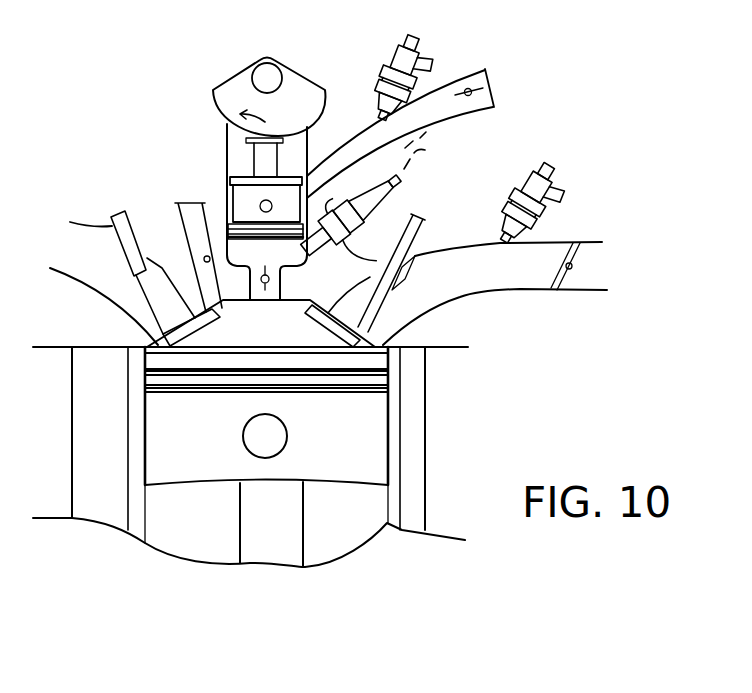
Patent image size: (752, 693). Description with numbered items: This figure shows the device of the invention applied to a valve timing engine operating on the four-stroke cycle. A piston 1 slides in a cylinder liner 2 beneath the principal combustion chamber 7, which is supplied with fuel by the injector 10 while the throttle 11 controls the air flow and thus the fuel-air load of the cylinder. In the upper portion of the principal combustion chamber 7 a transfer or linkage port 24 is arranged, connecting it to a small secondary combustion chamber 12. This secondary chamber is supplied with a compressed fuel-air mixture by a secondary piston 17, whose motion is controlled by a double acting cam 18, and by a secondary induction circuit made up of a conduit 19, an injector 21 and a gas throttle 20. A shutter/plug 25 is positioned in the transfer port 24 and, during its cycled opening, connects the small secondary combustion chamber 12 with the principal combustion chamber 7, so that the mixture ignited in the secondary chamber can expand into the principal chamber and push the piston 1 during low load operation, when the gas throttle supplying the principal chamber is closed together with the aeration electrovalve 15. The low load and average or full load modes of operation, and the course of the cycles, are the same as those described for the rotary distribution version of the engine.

The piston 1 is at (160, 460).
The cylinder liner 2 is at (140, 415).
The principal combustion chamber 7 is at (230, 330).
The injector 10 is at (543, 213).
The throttle 11 is at (467, 288).
The secondary combustion chamber 12 is at (233, 247).
The aeration electrovalve 15 is at (205, 257).
The piston 17 is at (227, 160).
The double acting cam 18 is at (290, 100).
The conduit 19 is at (423, 115).
The gas throttle 20 is at (487, 84).
The injector 21 is at (432, 53).
The transfer port 24 is at (265, 290).
The shutter/plug 25 is at (183, 205).